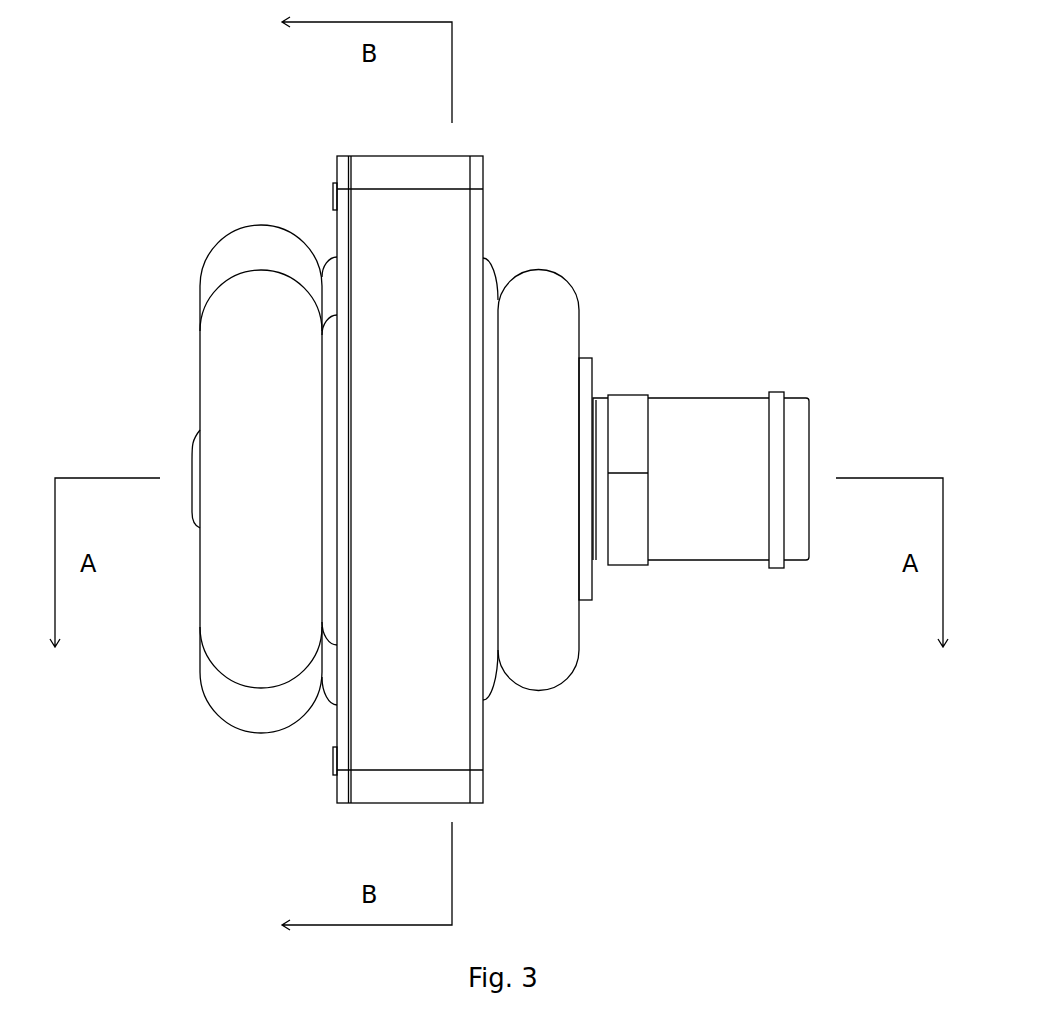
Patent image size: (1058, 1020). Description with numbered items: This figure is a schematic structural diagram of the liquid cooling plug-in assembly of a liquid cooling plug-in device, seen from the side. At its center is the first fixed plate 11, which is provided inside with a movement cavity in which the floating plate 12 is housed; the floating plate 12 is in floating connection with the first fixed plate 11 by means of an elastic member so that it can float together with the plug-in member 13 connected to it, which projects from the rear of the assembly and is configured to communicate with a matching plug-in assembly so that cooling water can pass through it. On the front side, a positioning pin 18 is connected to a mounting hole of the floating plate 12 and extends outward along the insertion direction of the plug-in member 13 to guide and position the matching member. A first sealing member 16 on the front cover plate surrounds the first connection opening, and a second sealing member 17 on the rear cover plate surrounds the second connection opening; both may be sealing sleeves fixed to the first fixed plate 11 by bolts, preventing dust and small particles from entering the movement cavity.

The first fixed plate 11 is at (465, 189).
The floating plate 12 is at (595, 358).
The plug-in member 13 is at (707, 425).
The first sealing member 16 is at (222, 720).
The second sealing member 17 is at (570, 280).
The positioning pin 18 is at (200, 432).